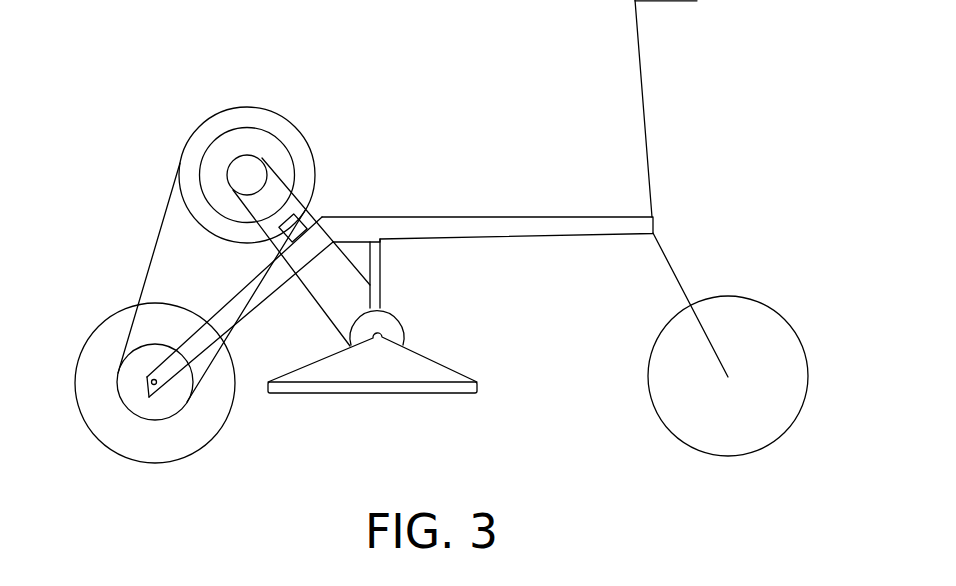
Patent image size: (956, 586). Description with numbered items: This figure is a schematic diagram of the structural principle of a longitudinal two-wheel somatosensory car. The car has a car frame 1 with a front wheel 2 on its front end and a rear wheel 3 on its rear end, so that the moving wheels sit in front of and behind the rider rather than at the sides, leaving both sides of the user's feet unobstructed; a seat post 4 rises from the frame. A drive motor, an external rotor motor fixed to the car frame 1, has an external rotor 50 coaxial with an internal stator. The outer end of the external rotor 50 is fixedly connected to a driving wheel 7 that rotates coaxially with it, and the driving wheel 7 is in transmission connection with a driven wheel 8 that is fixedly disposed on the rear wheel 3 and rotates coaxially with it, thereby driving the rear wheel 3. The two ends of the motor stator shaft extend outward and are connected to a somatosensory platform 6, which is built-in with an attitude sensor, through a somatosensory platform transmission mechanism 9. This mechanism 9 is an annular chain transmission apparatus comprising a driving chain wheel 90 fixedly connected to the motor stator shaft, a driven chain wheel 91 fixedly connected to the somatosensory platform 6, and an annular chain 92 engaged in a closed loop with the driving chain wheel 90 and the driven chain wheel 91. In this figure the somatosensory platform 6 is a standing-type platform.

The car frame 1 is at (368, 217).
The front wheel 2 is at (782, 337).
The rear wheel 3 is at (73, 362).
The seat post 4 is at (697, 1).
The somatosensory platform 6 is at (440, 388).
The driving wheel 7 is at (260, 110).
The driven wheel 8 is at (118, 376).
The somatosensory platform transmission mechanism 9 is at (393, 281).
The external rotor 50 is at (265, 132).
The driving chain wheel 90 is at (248, 175).
The driven chain wheel 91 is at (387, 325).
The annular chain 92 is at (357, 268).